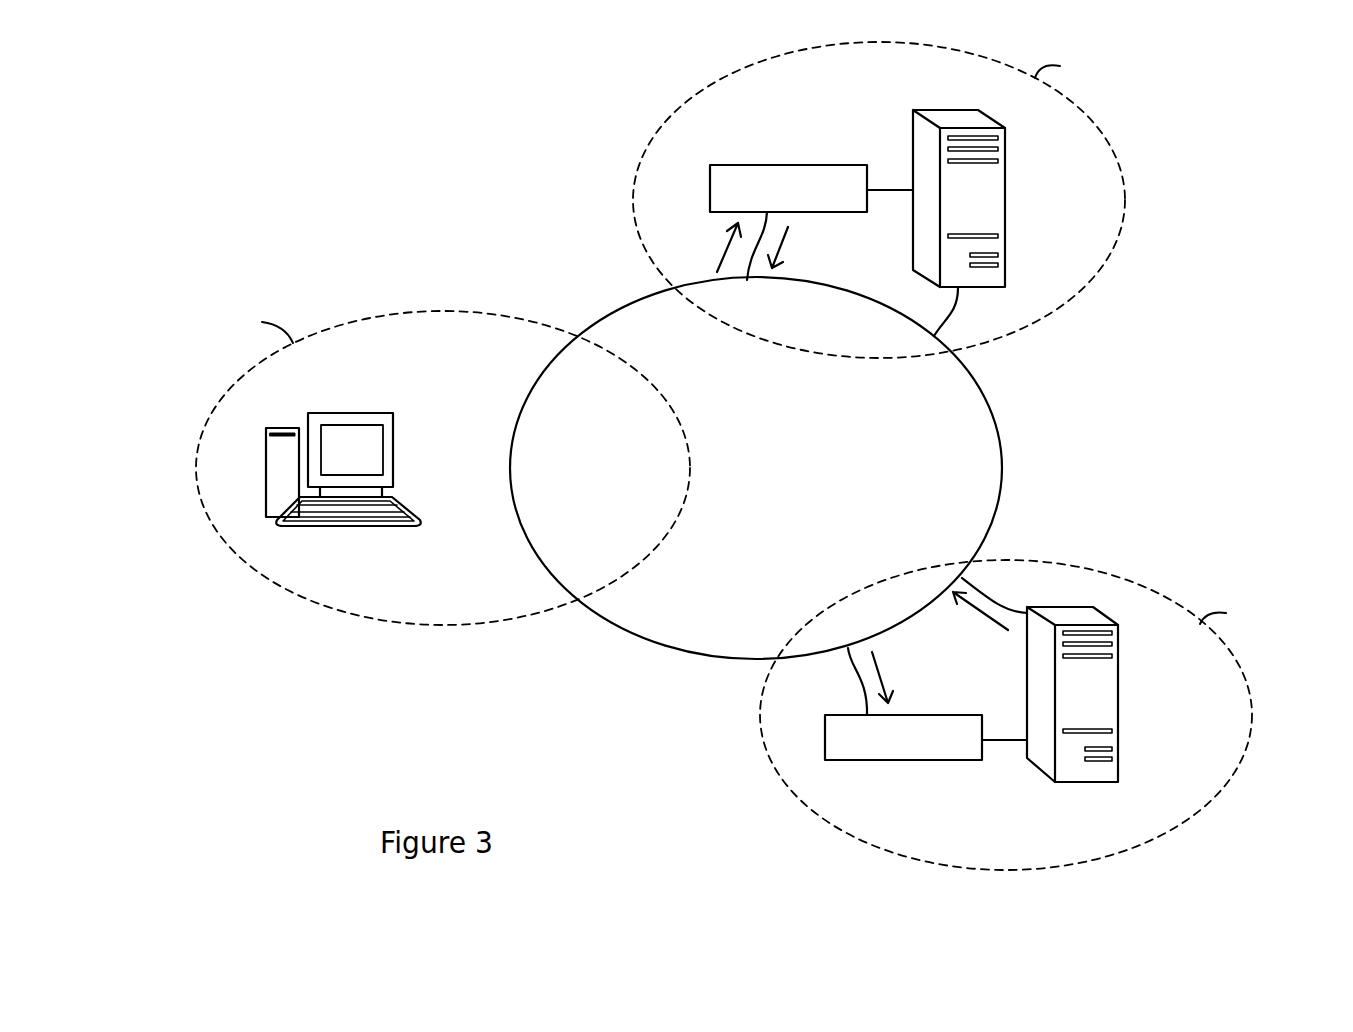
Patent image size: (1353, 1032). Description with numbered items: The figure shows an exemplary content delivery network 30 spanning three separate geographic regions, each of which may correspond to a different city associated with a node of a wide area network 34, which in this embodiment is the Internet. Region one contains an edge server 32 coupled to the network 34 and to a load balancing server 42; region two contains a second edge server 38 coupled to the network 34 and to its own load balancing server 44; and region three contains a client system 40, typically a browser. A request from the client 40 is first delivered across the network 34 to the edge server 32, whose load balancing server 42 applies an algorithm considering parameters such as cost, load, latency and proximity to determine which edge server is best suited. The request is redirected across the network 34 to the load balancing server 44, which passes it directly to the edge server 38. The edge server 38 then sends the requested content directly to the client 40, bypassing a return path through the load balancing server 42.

The content delivery network 30 is at (480, 778).
The edge server 32 is at (1006, 155).
The wide area network 34 is at (1003, 464).
The edge server 38 is at (1120, 650).
The client system 40 is at (381, 413).
The load balancing server 42 is at (834, 165).
The load balancing server 44 is at (923, 760).